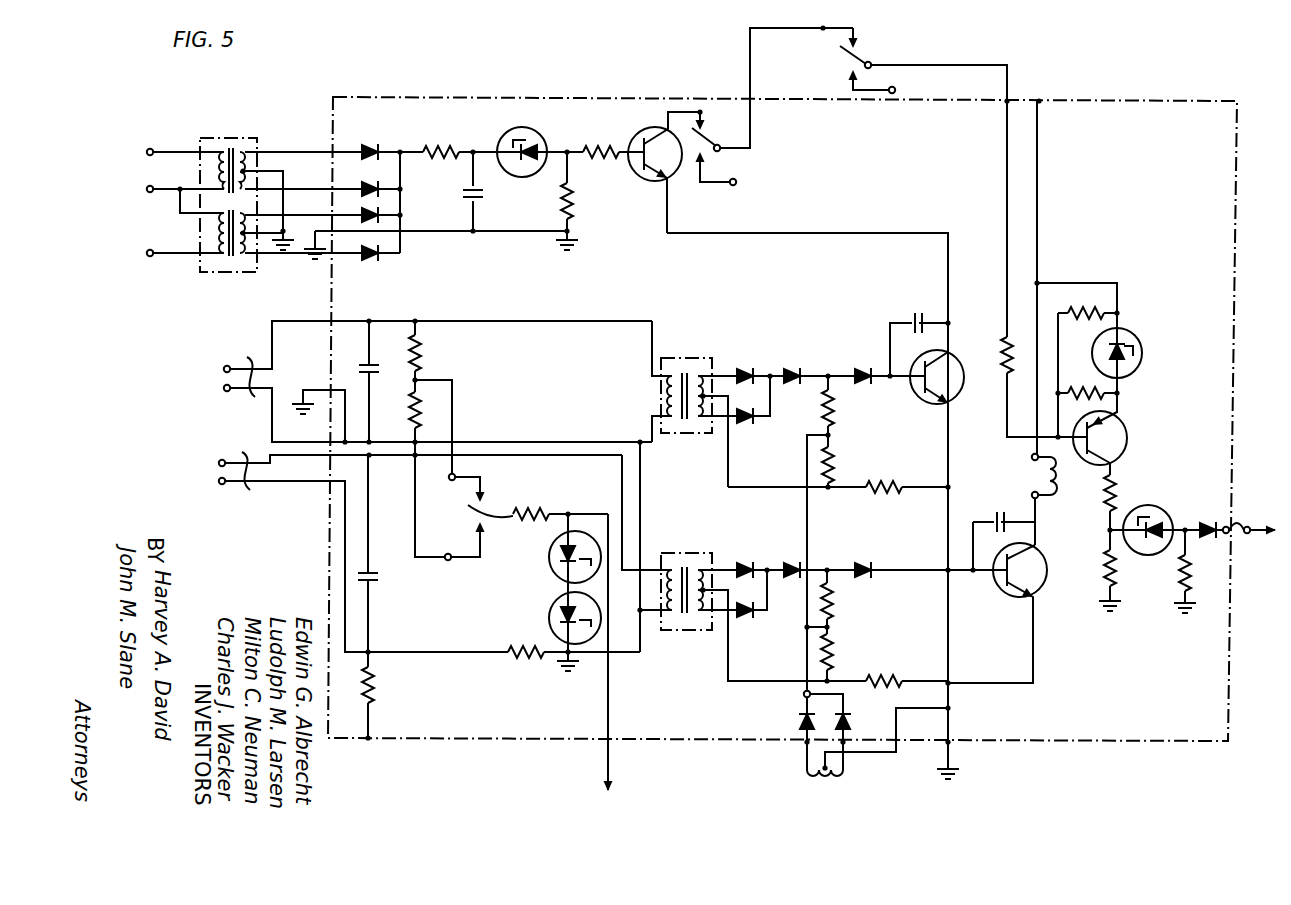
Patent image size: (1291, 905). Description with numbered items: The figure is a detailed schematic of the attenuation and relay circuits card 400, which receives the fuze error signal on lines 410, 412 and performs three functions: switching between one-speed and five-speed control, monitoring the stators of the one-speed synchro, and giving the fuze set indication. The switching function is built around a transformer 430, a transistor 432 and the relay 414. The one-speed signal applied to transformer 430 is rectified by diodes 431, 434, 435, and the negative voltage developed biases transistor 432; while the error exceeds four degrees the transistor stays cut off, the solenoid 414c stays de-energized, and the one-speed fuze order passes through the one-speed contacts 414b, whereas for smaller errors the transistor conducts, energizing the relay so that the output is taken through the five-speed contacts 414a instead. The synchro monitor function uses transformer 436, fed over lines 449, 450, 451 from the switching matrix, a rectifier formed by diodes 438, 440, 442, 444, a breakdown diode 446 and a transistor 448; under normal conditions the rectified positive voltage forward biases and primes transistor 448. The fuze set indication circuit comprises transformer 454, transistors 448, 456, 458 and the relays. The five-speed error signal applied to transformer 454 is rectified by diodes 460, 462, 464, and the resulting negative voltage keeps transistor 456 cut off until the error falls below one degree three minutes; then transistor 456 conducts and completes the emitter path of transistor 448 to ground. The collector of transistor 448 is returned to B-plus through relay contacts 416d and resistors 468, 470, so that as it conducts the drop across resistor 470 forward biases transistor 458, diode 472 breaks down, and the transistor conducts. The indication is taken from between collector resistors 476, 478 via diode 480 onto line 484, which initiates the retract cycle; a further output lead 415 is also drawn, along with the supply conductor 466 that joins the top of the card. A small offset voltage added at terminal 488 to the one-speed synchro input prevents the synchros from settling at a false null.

The attenuation and relay circuits card 400 is at (656, 97).
The line 410 is at (252, 357).
The line 412 is at (251, 455).
The relay 414 is at (720, 157).
The 5× contacts 414a is at (449, 561).
The 1× contacts 414b is at (483, 473).
The solenoid 414c is at (1046, 477).
The output lead 415 is at (606, 763).
The relay contacts 416d is at (823, 31).
The transformer 430 is at (664, 630).
The diode 431 is at (745, 561).
The transistor 432 is at (1000, 594).
The diode 434 is at (792, 561).
The diode 435 is at (745, 619).
The transformer 436 is at (253, 138).
The diode 438 is at (386, 139).
The diode 440 is at (372, 184).
The diode 442 is at (363, 213).
The diode 444 is at (370, 262).
The breakdown diode 446 is at (537, 128).
The transistor 448 is at (648, 180).
The line 449 is at (190, 150).
The line 450 is at (168, 186).
The line 451 is at (180, 256).
The transformer 454 is at (716, 360).
The transistor 456 is at (930, 406).
The transistor 458 is at (1128, 438).
The diode 460 is at (757, 354).
The diode 462 is at (794, 367).
The diode 464 is at (744, 425).
The supply conductor 466 is at (1040, 101).
The resistor 468 is at (1002, 358).
The resistor 470 is at (1096, 303).
The diode 472 is at (1138, 343).
The collector resistor 476 is at (1106, 497).
The collector resistor 478 is at (1106, 571).
The diode 480 is at (1163, 514).
The line 484 is at (1238, 534).
The terminal 488 is at (369, 737).